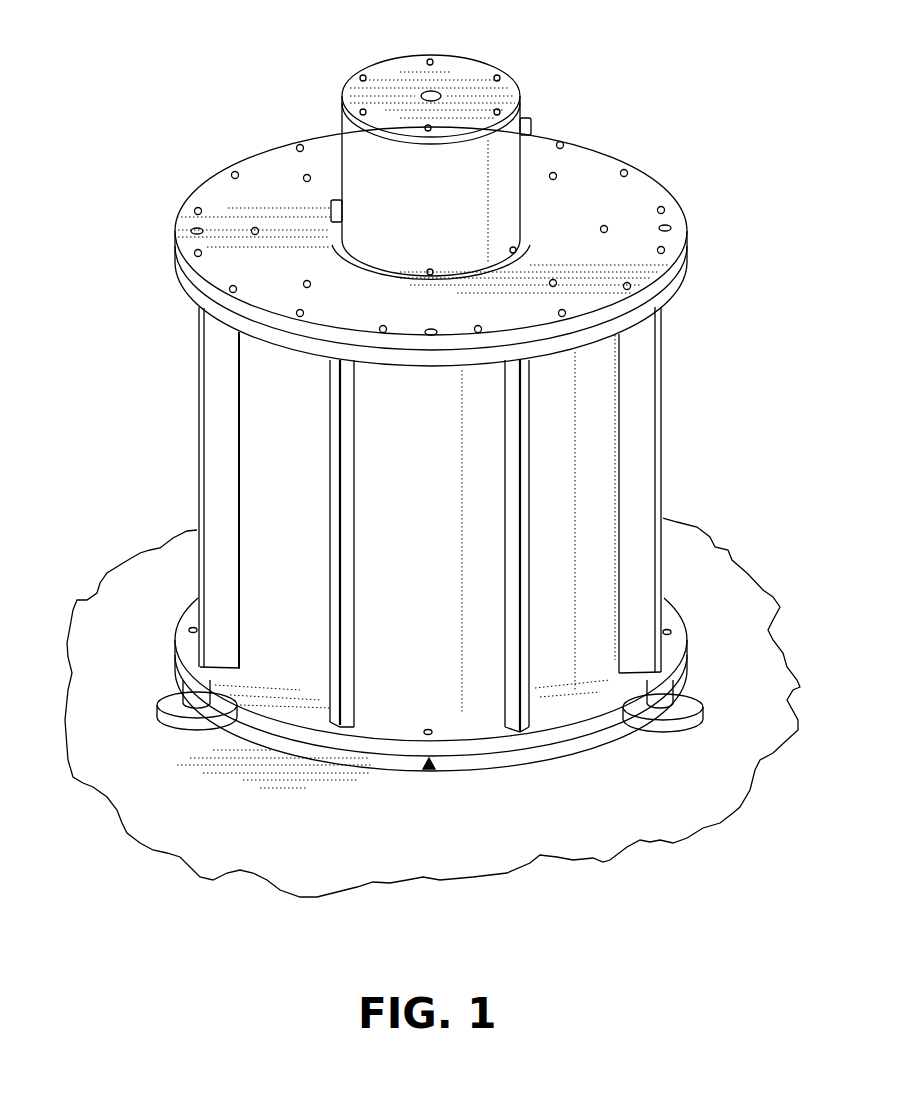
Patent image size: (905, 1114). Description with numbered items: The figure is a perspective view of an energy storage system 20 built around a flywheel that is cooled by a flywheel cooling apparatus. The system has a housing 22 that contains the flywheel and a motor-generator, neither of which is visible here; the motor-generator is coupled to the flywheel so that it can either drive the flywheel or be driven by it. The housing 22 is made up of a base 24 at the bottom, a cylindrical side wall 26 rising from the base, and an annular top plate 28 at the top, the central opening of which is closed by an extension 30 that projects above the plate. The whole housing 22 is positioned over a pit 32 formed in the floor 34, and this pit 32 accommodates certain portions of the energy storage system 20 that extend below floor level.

The energy storage system 20 is at (380, 440).
The housing 22 is at (359, 519).
The base 24 is at (475, 730).
The cylindrical side wall 26 is at (300, 662).
The annular top plate 28 is at (215, 190).
The extension 30 is at (468, 70).
The pit 32 is at (420, 766).
The floor 34 is at (133, 660).